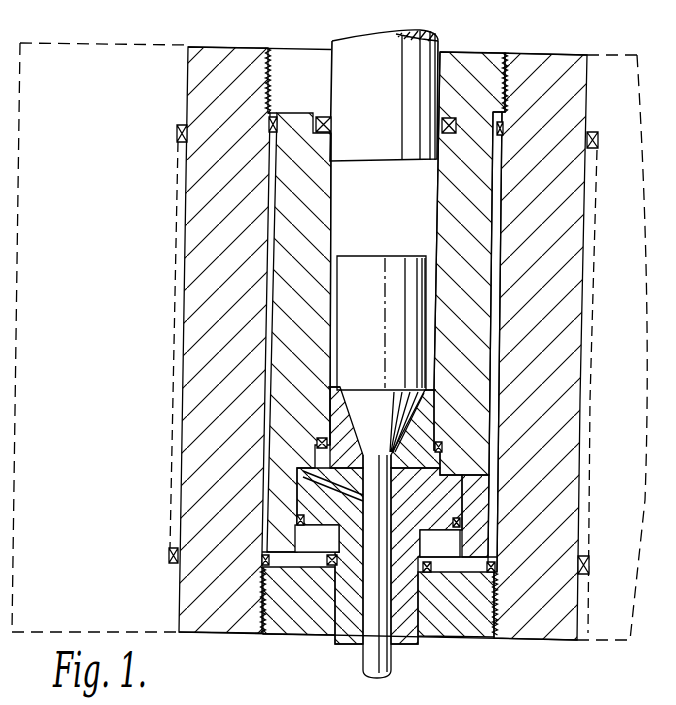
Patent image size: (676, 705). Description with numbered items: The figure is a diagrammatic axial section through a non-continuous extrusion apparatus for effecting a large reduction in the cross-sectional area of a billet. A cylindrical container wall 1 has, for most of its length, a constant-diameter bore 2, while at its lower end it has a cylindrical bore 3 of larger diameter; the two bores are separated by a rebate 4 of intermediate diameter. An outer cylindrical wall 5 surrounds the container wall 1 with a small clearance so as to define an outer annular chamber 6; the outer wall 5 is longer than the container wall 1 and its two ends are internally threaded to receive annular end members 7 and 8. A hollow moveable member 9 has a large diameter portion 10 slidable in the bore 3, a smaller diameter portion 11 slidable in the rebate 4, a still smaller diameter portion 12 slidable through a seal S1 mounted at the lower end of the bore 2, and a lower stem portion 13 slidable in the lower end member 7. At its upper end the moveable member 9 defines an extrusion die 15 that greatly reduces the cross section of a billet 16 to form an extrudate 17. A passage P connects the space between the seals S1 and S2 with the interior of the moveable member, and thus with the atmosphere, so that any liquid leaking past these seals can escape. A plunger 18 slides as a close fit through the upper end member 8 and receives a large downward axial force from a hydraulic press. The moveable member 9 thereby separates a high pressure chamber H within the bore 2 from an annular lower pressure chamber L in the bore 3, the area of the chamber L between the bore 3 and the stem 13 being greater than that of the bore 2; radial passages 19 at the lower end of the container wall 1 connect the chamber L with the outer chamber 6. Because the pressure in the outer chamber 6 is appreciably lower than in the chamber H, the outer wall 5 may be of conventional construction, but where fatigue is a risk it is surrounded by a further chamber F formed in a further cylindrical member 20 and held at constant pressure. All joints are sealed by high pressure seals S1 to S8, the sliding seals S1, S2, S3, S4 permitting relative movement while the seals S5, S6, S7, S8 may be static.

The cylindrical container wall 1 is at (452, 233).
The bore 2 is at (428, 206).
The cylindrical bore 3 is at (458, 539).
The rebate 4 is at (437, 458).
The outer cylindrical wall 5 is at (572, 256).
The outer annular chamber 6 is at (498, 342).
The lower end member 7 is at (468, 622).
The upper end member 8 is at (481, 65).
The moveable member 9 is at (293, 500).
The large diameter portion 10 is at (448, 496).
The smaller diameter portion 11 is at (315, 461).
The still smaller diameter portion 12 is at (311, 466).
The lower stem portion 13 is at (348, 636).
The extrusion die 15 is at (383, 455).
The billet 16 is at (366, 262).
The extrudate 17 is at (377, 665).
The plunger 18 is at (388, 95).
The radial passages 19 is at (470, 554).
The further cylindrical member 20 is at (124, 62).
The further chamber F is at (178, 179).
The high pressure chamber H is at (377, 186).
The lower pressure chamber L is at (396, 541).
The passage P is at (298, 478).
The seal S1 is at (320, 444).
The seal S2 is at (297, 518).
The seal S3 is at (330, 566).
The seal S4 is at (331, 127).
The seal S5 is at (262, 562).
The seal S6 is at (269, 120).
The seal S7 is at (169, 560).
The seal S8 is at (177, 134).